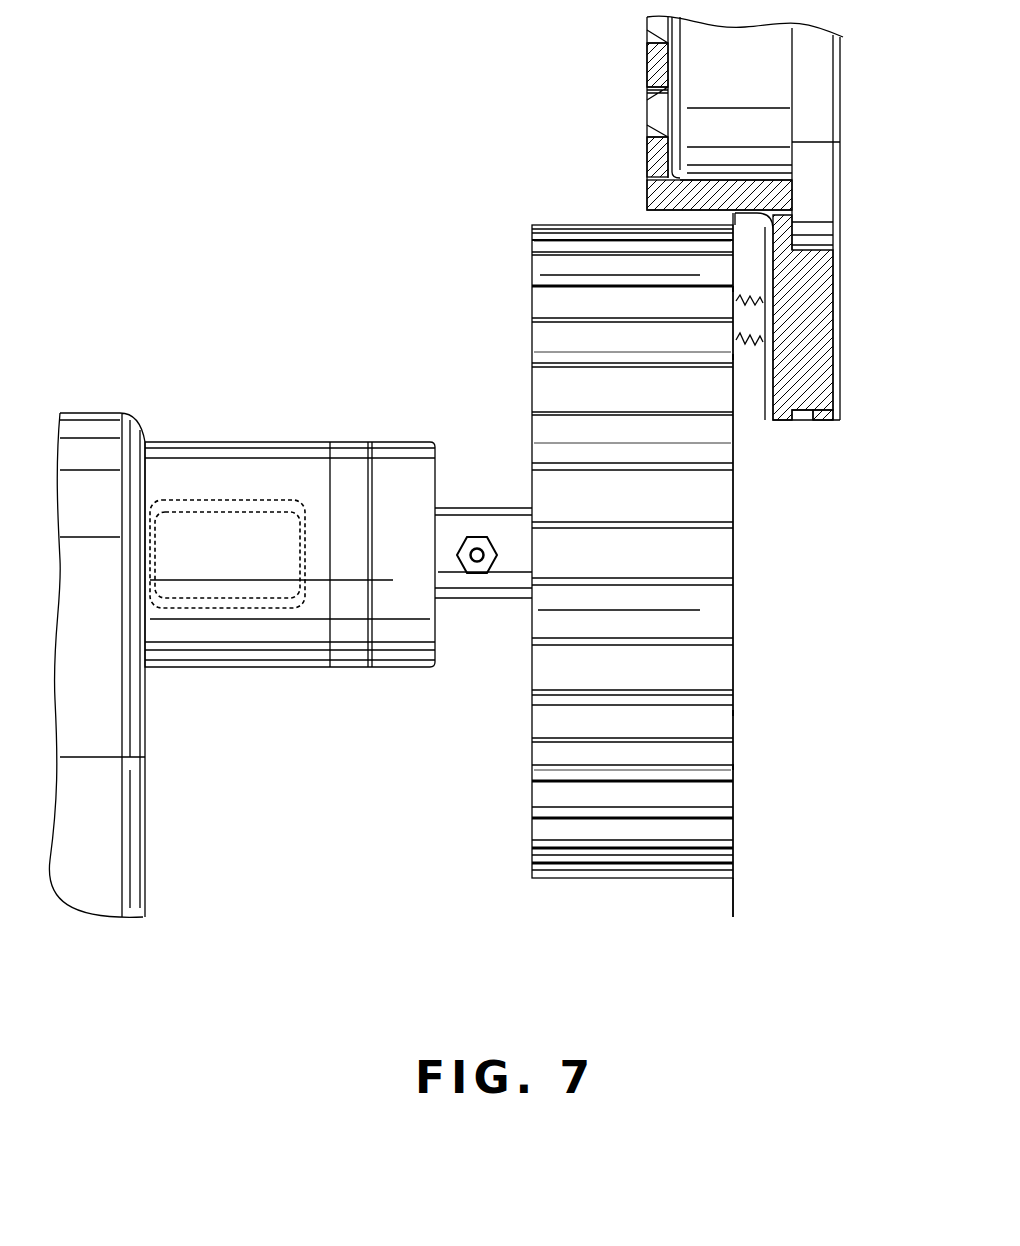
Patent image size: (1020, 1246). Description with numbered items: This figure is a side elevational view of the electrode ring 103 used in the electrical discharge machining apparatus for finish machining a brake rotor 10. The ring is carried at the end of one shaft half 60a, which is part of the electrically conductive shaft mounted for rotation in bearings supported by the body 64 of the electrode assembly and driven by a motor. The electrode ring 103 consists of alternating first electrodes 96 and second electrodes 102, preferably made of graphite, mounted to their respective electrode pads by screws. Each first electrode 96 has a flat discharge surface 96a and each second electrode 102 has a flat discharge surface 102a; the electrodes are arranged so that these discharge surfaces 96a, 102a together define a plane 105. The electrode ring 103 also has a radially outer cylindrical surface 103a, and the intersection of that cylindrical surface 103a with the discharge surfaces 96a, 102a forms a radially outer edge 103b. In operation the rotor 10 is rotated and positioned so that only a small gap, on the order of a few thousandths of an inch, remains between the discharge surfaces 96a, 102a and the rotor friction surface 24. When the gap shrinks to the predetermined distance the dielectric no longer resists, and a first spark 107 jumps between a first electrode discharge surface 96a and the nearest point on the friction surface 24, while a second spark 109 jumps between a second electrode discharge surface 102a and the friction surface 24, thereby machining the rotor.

The rotor 10 is at (580, 78).
The friction surface 24 is at (752, 400).
The shaft half 60a is at (480, 598).
The body 64 is at (245, 442).
The first electrode 96 is at (540, 298).
The first electrode discharge surface 96a is at (737, 290).
The second electrode 102 is at (540, 443).
The second electrode discharge surface 102a is at (735, 357).
The electrode ring 103 is at (653, 570).
The radially outer cylindrical surface 103a is at (568, 224).
The radially outer edge 103b is at (745, 213).
The plane 105 is at (733, 897).
The first spark 107 is at (742, 311).
The second spark 109 is at (742, 328).